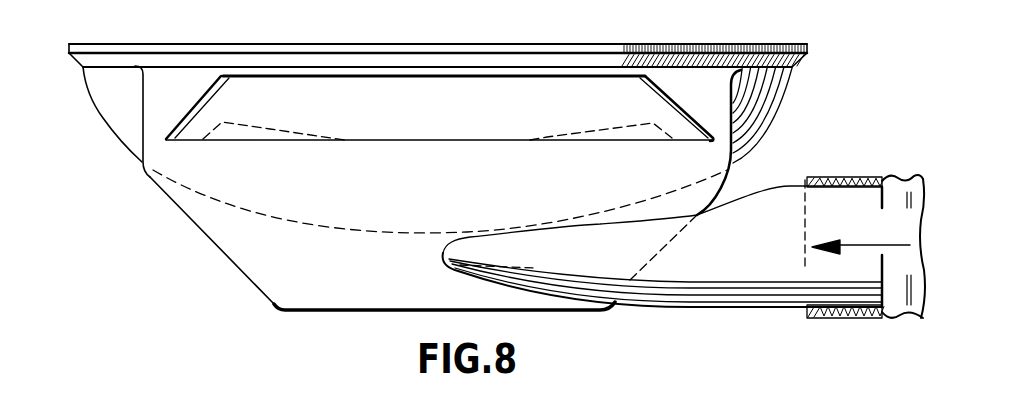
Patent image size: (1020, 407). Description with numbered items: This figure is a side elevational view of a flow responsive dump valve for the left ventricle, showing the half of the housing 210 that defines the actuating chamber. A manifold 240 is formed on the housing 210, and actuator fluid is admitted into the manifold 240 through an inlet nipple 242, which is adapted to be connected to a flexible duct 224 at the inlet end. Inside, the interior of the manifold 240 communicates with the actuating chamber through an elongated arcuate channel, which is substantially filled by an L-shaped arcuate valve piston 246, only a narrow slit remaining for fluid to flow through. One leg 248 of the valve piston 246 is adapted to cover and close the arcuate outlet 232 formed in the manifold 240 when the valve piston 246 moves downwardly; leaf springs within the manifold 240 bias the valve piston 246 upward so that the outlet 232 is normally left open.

The housing 210 is at (117, 114).
The flexible duct 224 is at (900, 318).
The arcuate outlet 232 is at (538, 80).
The manifold 240 is at (247, 258).
The inlet nipple 242 is at (755, 293).
The valve piston 246 is at (404, 96).
The leg of piston 248 is at (590, 97).